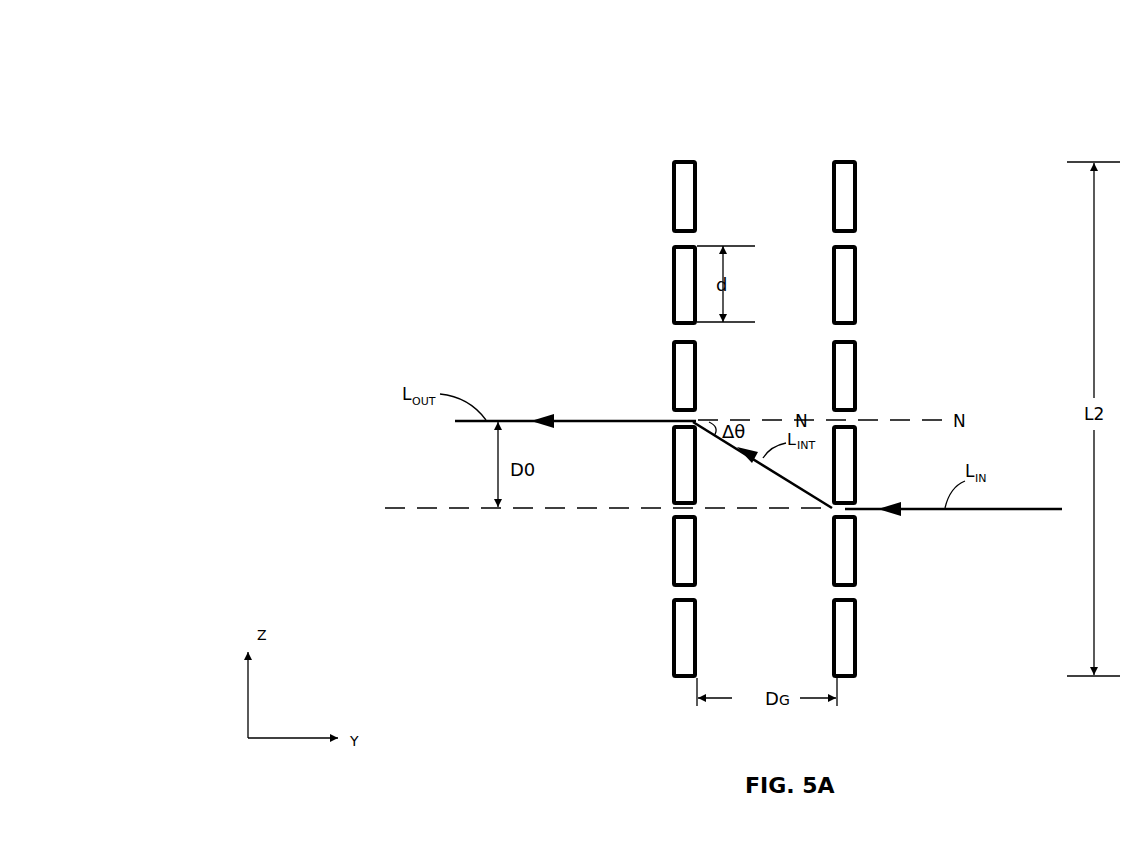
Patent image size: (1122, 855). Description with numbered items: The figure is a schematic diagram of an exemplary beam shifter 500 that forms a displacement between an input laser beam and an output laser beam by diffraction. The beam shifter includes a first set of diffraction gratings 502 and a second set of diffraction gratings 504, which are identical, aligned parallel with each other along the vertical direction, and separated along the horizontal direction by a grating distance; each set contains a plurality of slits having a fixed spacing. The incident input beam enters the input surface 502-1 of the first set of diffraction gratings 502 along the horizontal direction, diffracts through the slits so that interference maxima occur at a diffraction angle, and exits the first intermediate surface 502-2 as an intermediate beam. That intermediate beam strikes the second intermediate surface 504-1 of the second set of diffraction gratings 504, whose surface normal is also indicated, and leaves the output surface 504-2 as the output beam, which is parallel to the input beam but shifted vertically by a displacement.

The optical assembly with grating pair 500 is at (834, 43).
The first set of diffraction gratings 502 is at (845, 160).
The input surface 502-1 is at (870, 222).
The first intermediate surface 502-2 is at (811, 227).
The second set of diffraction gratings 504 is at (688, 160).
The second intermediate surface 504-1 is at (722, 230).
The output surface 504-2 is at (658, 231).